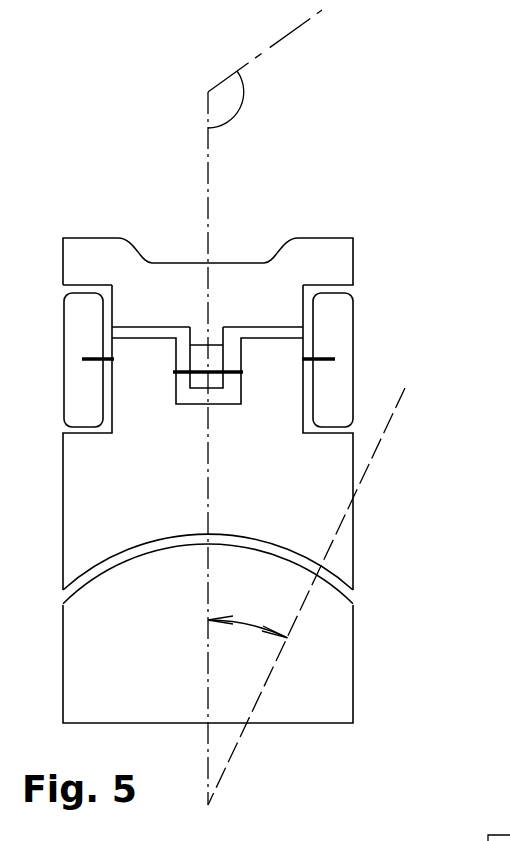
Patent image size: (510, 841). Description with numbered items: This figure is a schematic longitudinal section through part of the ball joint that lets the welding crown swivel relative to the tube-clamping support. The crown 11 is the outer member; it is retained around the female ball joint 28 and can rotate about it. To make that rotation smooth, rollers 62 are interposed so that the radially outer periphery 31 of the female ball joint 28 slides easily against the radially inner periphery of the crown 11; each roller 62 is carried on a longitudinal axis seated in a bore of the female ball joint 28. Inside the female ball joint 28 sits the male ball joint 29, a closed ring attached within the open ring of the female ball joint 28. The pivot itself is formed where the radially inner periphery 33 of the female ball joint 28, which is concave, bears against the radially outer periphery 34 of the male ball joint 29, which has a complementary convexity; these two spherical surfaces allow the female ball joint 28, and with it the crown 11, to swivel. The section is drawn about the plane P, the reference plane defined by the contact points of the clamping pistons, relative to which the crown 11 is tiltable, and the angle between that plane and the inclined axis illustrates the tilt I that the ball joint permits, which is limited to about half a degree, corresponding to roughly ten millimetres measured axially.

The crown 11 is at (176, 295).
The radially outer periphery of the female ball joint 31 is at (279, 334).
The rollers 62 is at (337, 332).
The female ball joint 28 is at (287, 478).
The radially outer periphery of the male ball joint 34 is at (162, 553).
The radially inner periphery of the female ball joint 33 is at (135, 553).
The male ball joint 29 is at (317, 670).
The plane P is at (227, 100).
The tilt I is at (250, 622).